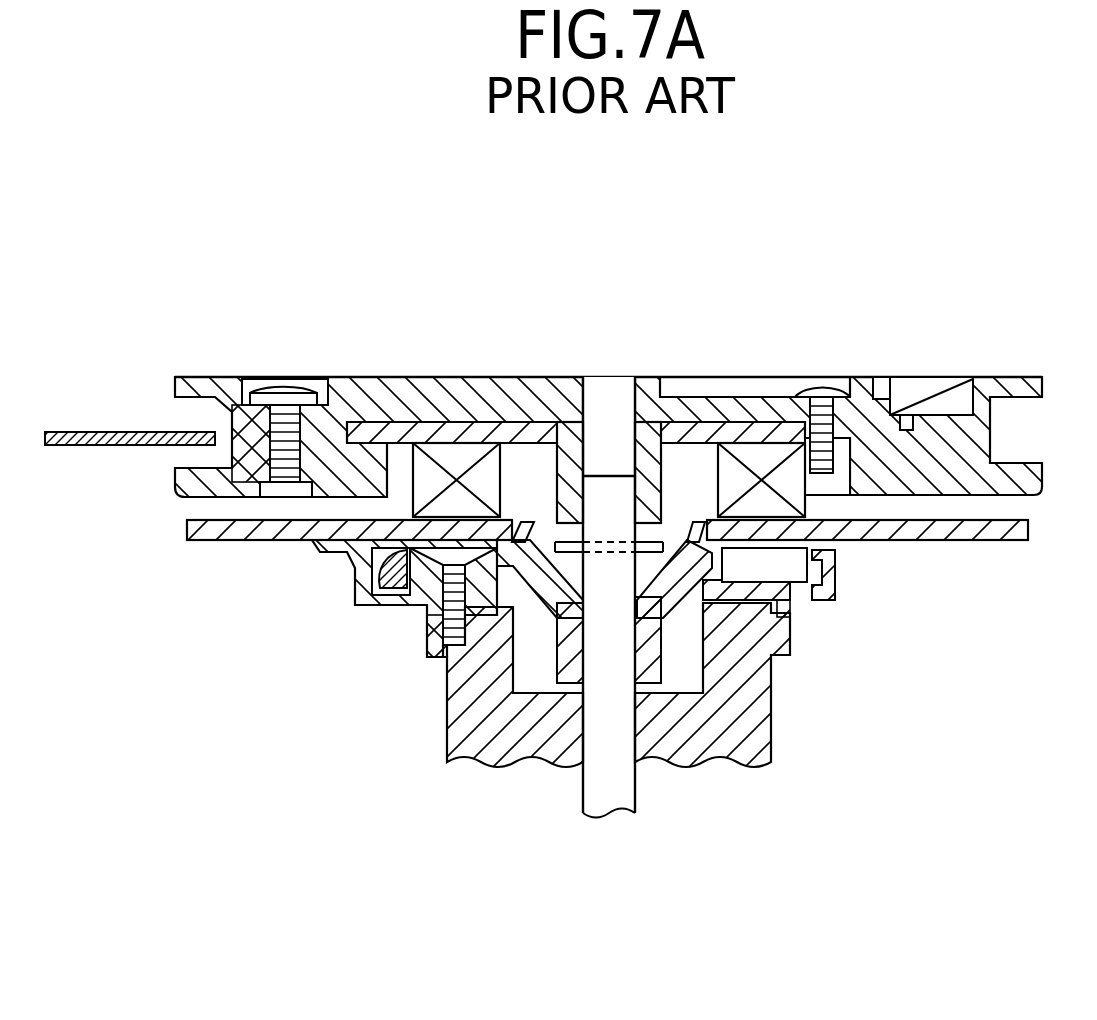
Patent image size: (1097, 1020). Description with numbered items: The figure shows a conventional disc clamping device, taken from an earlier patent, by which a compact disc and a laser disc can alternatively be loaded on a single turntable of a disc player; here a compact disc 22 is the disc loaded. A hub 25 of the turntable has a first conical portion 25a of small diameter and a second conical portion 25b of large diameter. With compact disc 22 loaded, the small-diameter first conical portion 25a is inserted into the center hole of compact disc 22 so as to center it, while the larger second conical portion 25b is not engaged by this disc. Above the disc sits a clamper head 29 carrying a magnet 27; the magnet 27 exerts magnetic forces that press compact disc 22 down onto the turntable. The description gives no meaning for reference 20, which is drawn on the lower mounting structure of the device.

The clamper head 29 is at (401, 379).
The magnet 27 is at (763, 452).
The first conical portion 25a is at (703, 522).
The compact disc 22 is at (993, 540).
The bracket 20 is at (357, 572).
The hub 25 is at (687, 617).
The second conical portion 25b is at (822, 570).